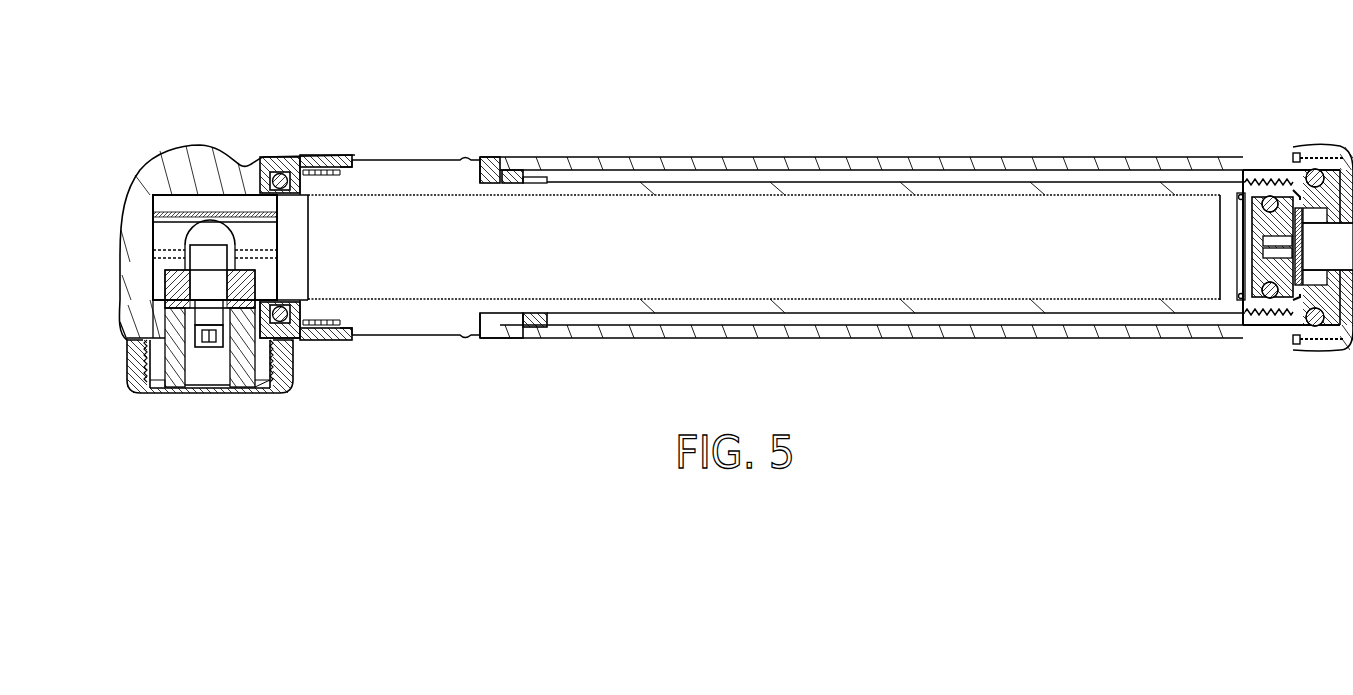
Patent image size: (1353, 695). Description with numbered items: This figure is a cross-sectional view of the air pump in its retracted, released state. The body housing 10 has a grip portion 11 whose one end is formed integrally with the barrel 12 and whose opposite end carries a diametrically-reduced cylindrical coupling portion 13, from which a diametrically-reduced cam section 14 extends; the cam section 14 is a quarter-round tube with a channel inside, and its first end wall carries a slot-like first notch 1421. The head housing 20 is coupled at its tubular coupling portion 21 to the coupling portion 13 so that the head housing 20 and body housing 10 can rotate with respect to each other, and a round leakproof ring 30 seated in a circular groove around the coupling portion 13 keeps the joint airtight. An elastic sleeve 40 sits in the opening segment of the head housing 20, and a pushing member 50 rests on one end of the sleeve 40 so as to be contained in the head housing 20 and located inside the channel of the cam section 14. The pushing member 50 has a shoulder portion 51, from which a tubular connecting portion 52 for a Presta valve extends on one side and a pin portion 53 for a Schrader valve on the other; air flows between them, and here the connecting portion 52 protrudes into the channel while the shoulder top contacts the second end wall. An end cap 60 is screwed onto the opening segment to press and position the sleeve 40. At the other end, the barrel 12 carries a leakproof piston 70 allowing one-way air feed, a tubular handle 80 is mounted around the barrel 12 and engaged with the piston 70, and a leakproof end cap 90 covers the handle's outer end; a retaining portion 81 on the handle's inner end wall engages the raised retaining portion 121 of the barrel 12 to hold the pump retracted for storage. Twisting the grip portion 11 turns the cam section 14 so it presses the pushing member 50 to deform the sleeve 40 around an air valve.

The body housing 10 is at (414, 348).
The grip portion 11 is at (413, 158).
The barrel 12 is at (868, 187).
The raised retaining portion 121 is at (514, 155).
The coupling portion 13 is at (312, 155).
The cam section 14 is at (176, 205).
The first notch 1421 is at (216, 230).
The head housing 20 is at (124, 158).
The coupling portion 21 is at (335, 155).
The leakproof ring 30 is at (278, 155).
The elastic sleeve 40 is at (248, 356).
The pushing member 50 is at (165, 305).
The shoulder portion 51 is at (168, 283).
The connecting portion 52 is at (152, 262).
The pin portion 53 is at (160, 335).
The end cap 60 is at (259, 398).
The leakproof piston 70 is at (1285, 167).
The handle 80 is at (984, 157).
The retaining portion 81 is at (488, 155).
The leakproof end cap 90 is at (1325, 148).